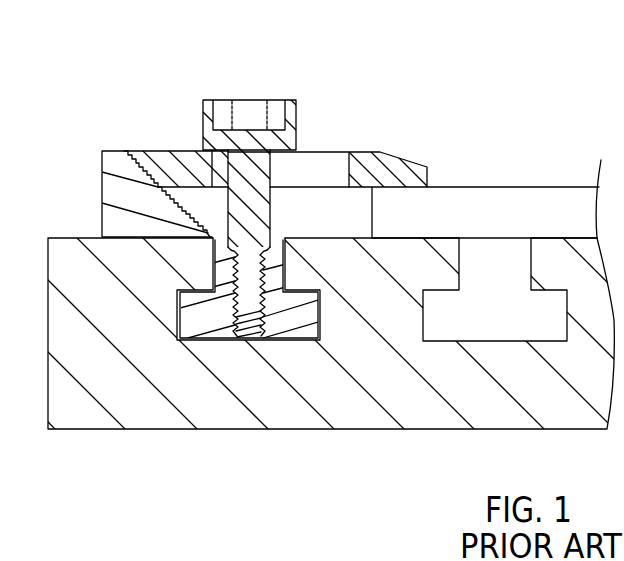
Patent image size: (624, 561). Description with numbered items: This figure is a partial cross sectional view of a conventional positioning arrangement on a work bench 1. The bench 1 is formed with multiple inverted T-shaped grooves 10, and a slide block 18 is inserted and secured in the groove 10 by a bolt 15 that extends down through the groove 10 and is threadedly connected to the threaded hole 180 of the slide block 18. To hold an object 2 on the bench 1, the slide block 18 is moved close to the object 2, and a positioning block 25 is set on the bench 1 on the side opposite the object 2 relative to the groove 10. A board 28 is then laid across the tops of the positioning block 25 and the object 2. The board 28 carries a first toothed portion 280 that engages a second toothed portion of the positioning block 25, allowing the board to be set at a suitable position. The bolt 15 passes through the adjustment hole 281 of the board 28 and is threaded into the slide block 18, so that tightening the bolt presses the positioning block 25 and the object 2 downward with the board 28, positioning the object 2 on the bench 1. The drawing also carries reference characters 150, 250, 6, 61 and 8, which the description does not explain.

The work bench 1 is at (207, 397).
The inverted T-shaped groove 10 is at (497, 330).
The recess 150 is at (303, 240).
The slide block 18 is at (293, 325).
The threaded hole 180 is at (243, 333).
The bolt 15 is at (208, 100).
The object 2 is at (528, 187).
The board 28 is at (367, 150).
The adjustment hole 281 is at (316, 162).
The positioning block 25 is at (108, 190).
The first toothed portion 280 is at (142, 163).
The stepped surface 250 is at (180, 206).
The element (clipped) 6 is at (620, 47).
The element (clipped) 61 is at (617, 80).
The element (clipped) 8 is at (621, 129).